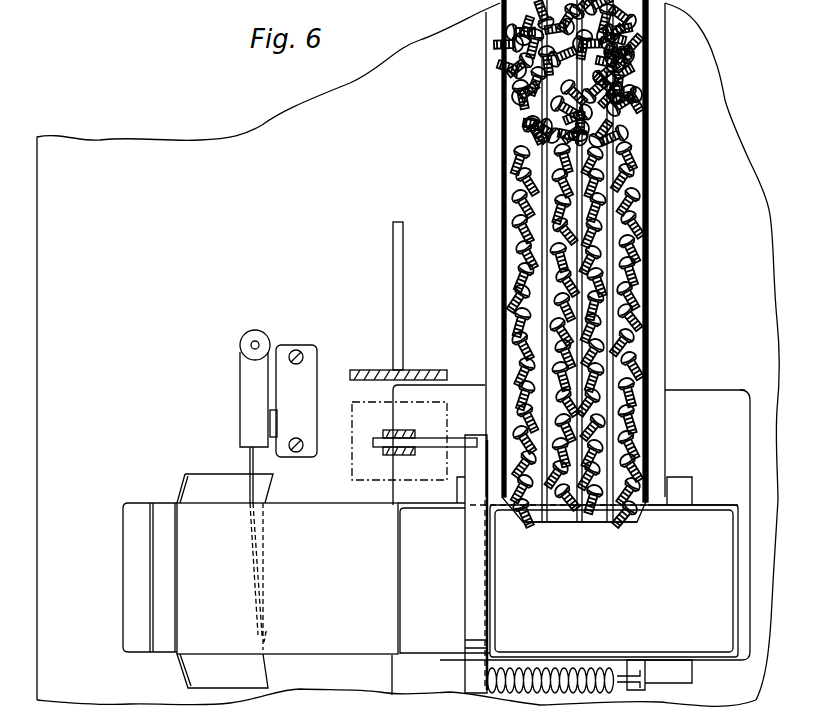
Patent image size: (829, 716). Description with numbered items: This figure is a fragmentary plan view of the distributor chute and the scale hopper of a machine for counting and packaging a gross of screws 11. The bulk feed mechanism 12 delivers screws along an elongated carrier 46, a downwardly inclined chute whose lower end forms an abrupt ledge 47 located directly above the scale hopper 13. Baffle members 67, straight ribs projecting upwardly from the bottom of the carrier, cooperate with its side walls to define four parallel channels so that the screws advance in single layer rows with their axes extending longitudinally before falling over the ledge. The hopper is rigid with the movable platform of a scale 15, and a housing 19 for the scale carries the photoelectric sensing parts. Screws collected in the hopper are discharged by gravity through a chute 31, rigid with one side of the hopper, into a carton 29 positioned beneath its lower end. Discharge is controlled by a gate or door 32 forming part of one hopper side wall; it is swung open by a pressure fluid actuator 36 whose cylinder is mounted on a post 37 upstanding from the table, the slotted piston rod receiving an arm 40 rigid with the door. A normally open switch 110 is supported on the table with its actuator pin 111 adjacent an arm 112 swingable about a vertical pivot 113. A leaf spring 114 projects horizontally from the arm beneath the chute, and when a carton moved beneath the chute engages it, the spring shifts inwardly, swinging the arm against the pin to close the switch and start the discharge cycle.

The screws 11 is at (630, 137).
The bulk feed mechanism 12 is at (476, 112).
The scale hopper 13 is at (704, 507).
The scale 15 is at (683, 390).
The scale housing 19 is at (716, 390).
The carton 29 is at (163, 503).
The chute 31 is at (346, 505).
The gate or door 32 is at (485, 588).
The pressure fluid actuator 36 is at (352, 452).
The post 37 is at (438, 372).
The arm 40 is at (430, 440).
The carrier 46 is at (662, 197).
The ledge 47 is at (605, 522).
The baffle members 67 is at (608, 28).
The switch 110 is at (316, 366).
The actuator pin 111 is at (273, 422).
The arm 112 is at (243, 427).
The vertical pivot 113 is at (247, 344).
The leaf spring 114 is at (248, 458).